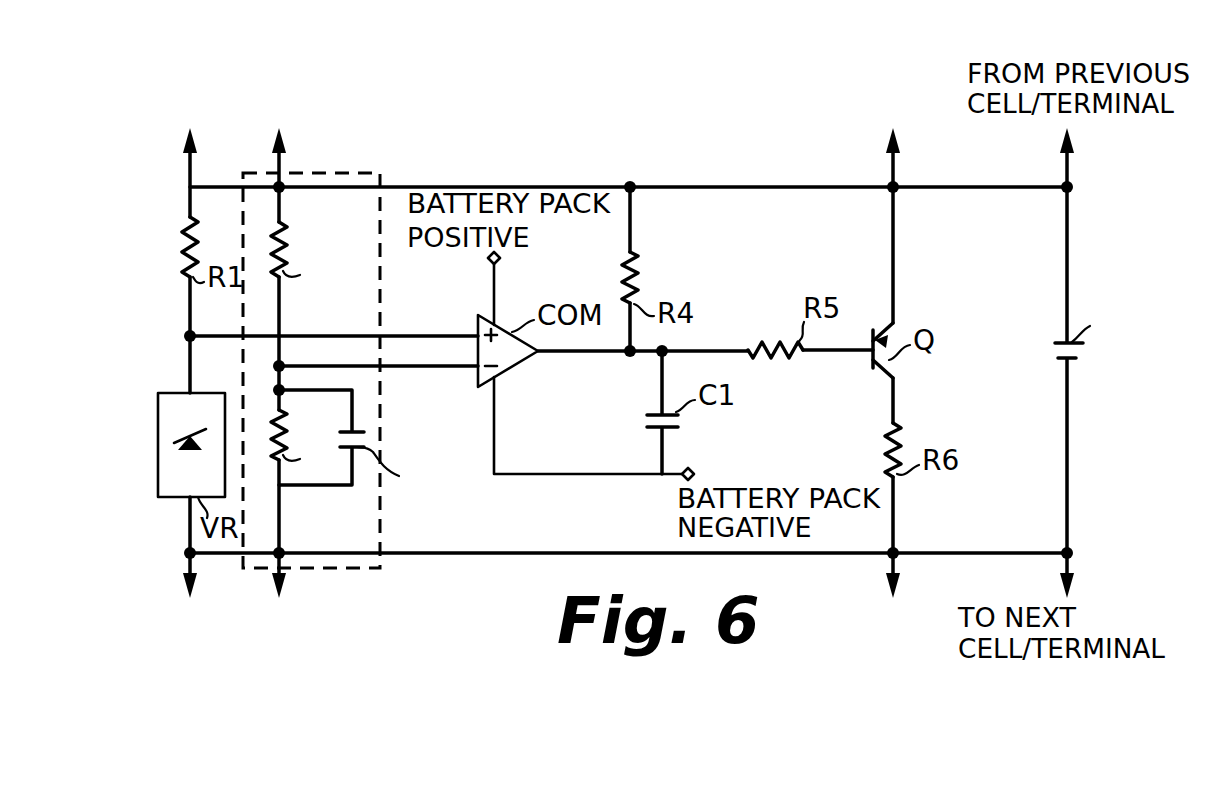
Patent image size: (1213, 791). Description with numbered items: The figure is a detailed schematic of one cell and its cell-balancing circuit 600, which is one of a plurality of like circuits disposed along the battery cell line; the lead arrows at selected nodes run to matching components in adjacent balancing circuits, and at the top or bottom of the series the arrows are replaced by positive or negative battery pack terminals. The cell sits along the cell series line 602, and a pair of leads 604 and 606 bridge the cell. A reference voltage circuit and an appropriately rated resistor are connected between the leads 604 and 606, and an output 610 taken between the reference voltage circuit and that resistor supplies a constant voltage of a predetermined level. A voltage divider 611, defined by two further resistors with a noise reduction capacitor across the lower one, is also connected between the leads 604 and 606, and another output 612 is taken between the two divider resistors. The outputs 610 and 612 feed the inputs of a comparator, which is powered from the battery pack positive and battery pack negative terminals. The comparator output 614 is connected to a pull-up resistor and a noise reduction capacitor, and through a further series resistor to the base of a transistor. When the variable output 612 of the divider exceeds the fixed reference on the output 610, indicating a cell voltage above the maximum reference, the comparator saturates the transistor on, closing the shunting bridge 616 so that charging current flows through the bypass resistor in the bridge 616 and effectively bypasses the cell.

The cell-balancing circuit 600 is at (1115, 193).
The cell series line 602 is at (1068, 160).
The lead 604 is at (963, 190).
The lead 606 is at (964, 551).
The output 610 is at (335, 335).
The voltage divider 611 is at (347, 580).
The output 612 is at (395, 368).
The output of the comparator 614 is at (580, 355).
The shunting bridge 616 is at (894, 282).